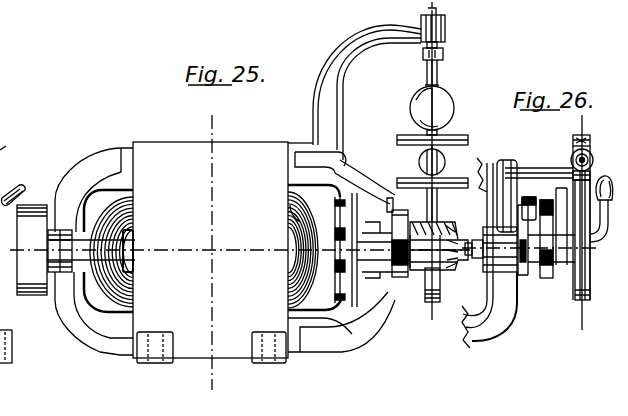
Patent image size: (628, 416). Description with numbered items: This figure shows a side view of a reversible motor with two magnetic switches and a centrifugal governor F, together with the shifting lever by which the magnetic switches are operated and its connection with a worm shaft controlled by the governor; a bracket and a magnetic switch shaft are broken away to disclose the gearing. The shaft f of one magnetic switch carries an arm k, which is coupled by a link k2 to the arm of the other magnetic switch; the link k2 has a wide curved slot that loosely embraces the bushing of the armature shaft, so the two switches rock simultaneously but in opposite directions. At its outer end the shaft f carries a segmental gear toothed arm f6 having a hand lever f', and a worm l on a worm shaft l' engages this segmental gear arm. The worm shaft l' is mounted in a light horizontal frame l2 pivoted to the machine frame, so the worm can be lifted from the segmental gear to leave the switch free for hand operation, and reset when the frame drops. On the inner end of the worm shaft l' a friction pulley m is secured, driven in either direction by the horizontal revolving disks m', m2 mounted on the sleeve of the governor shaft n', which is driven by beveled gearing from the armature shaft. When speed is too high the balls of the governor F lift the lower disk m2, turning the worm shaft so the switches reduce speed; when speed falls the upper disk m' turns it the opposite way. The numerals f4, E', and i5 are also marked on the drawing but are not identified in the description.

In FIG. 25, the handle pin f4 is at (6, 142).
In FIG. 25, the hand lever f' is at (15, 184).
In FIG. 25, the segmental gear toothed arm f6 is at (450, 292).
In FIG. 26, the segmental gear toothed arm f6 is at (591, 292).
In FIG. 25, the field coil E' is at (278, 212).
In FIG. 25, the governor shaft n' is at (418, 43).
In FIG. 25, the centrifugal governor F is at (450, 106).
In FIG. 25, the upper revolving disk m' is at (440, 132).
In FIG. 25, the friction pulley m is at (445, 161).
In FIG. 25, the lower revolving disk m2 is at (414, 182).
In FIG. 25, the link k2 is at (400, 279).
In FIG. 26, the link k2 is at (549, 210).
In FIG. 26, the horizontal frame l2 is at (584, 137).
In FIG. 26, the rail bar i5 is at (539, 161).
In FIG. 26, the worm l is at (587, 220).
In FIG. 26, the worm shaft l' is at (597, 165).
In FIG. 26, the shaft of the magnetic switch f is at (607, 215).
In FIG. 26, the arm k is at (532, 273).